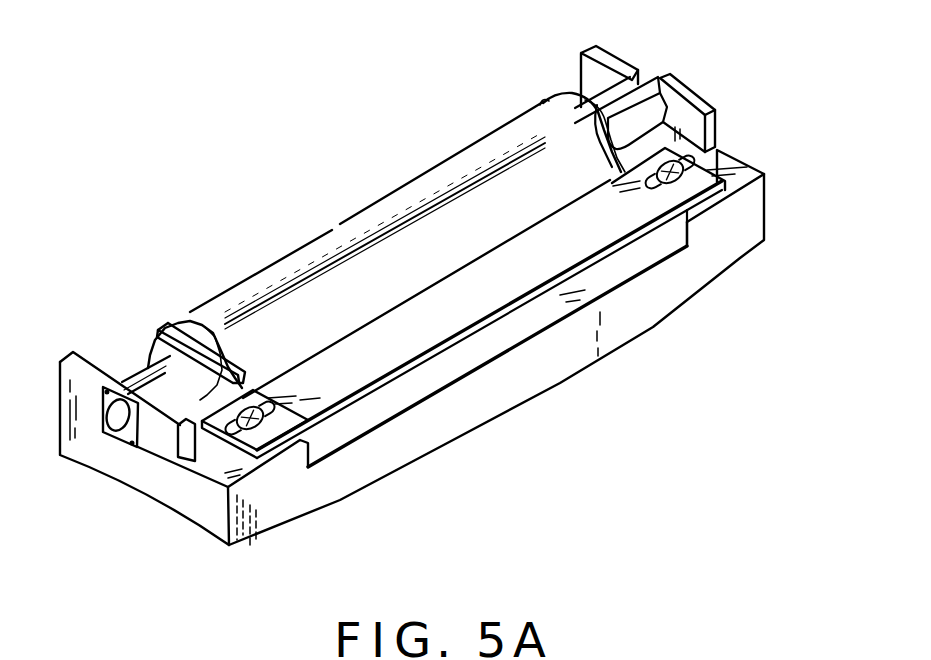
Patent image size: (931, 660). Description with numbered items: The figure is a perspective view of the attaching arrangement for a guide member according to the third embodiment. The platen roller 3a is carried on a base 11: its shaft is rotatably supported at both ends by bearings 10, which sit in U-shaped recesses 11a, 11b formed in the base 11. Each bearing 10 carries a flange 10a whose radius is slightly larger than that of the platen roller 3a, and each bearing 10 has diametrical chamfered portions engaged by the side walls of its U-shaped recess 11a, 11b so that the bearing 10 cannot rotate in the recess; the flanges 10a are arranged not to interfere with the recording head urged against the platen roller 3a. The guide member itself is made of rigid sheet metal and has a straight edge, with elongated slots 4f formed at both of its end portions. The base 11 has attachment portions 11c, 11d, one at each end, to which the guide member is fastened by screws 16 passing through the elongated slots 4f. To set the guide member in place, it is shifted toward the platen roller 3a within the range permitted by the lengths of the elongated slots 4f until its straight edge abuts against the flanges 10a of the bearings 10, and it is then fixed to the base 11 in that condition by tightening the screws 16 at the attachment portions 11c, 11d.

The base 11 is at (148, 477).
The U-shaped recess 11a is at (116, 381).
The U-shaped recess 11b is at (638, 75).
The attachment portion 11c is at (245, 463).
The attachment portion 11d is at (708, 212).
The bearing 10 is at (138, 367).
The flange 10a is at (222, 378).
The platen roller 3a is at (430, 188).
The elongated slot 4f is at (265, 443).
The screw 16 is at (268, 417).